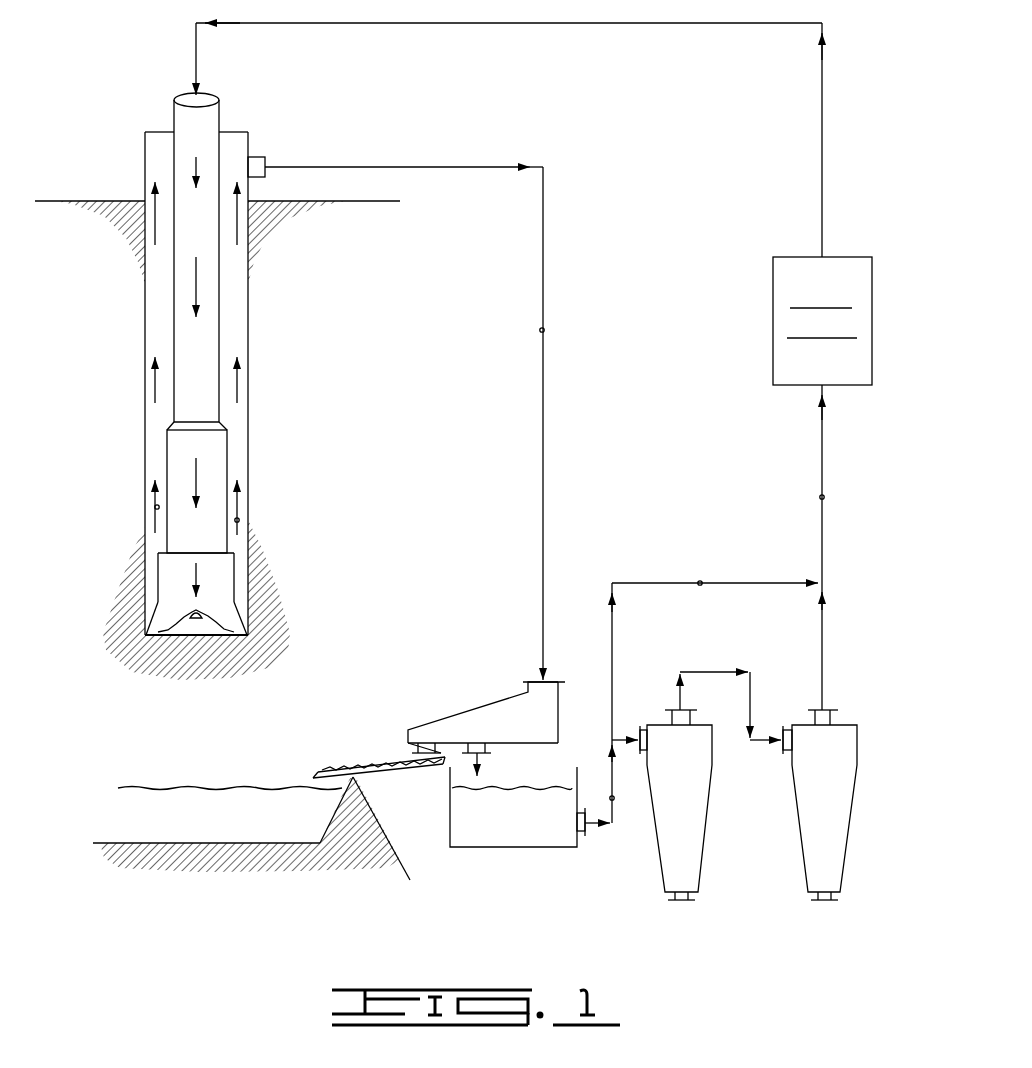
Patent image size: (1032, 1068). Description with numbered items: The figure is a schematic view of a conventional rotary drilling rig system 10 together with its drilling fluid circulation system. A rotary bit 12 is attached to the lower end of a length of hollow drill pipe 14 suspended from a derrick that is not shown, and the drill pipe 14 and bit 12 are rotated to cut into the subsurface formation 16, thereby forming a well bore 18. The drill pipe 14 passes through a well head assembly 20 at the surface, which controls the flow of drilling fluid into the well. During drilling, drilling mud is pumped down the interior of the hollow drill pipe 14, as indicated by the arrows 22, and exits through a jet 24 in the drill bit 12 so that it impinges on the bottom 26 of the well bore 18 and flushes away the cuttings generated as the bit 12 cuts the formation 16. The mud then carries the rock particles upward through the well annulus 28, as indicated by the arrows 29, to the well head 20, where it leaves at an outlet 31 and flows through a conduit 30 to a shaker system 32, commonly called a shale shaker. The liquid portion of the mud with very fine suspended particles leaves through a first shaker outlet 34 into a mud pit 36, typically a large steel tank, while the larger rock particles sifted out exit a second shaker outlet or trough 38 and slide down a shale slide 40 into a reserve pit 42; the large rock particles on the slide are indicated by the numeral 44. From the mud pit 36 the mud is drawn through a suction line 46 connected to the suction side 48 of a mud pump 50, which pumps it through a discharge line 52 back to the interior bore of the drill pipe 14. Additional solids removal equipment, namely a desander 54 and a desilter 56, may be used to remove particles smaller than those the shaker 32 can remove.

The rotary drilling rig system 10 is at (240, 261).
The rotary bit 12 is at (220, 573).
The hollow drill pipe 14 is at (209, 411).
The subsurface formation 16 is at (84, 263).
The well bore 18 is at (245, 334).
The well head assembly 20 is at (250, 142).
The arrows 22 is at (197, 280).
The jet 24 is at (190, 614).
The bottom of the well bore 26 is at (210, 640).
The well annulus 28 is at (237, 443).
The arrows 29 is at (155, 507).
The conduit 30 is at (541, 331).
The outlet 31 is at (263, 158).
The shaker system 32 is at (527, 727).
The first shaker outlet 34 is at (490, 750).
The mud pit 36 is at (492, 848).
The second shaker outlet or trough 38 is at (417, 748).
The shale slide 40 is at (383, 773).
The reserve pit 42 is at (208, 823).
The large rock particles 44 is at (352, 771).
The suction line 46 is at (825, 497).
The suction side 48 is at (815, 387).
The mud pump 50 is at (835, 372).
The discharge line 52 is at (628, 23).
The desander 54 is at (692, 835).
The desilter 56 is at (835, 835).